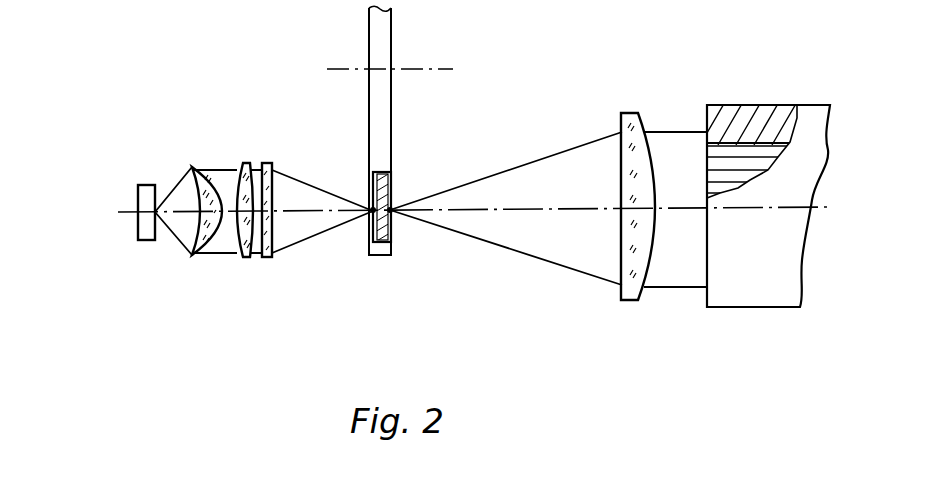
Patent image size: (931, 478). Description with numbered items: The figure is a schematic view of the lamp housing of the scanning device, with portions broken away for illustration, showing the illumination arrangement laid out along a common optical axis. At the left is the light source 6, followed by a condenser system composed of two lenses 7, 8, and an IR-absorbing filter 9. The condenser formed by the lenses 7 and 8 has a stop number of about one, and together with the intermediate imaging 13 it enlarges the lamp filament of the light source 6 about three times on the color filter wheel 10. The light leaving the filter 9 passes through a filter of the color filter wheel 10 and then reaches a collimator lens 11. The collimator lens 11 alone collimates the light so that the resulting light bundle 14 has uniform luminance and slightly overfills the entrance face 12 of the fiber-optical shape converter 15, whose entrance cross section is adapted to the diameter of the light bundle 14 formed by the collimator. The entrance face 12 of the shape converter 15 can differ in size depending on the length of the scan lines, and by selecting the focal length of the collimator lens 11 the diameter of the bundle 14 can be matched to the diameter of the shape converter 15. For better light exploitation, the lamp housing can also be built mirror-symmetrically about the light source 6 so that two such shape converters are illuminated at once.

The light source 6 is at (145, 232).
The condenser lens 7 is at (198, 252).
The condenser lens 8 is at (248, 258).
The IR-absorbing filter 9 is at (267, 258).
The color filter wheel 10 is at (382, 53).
The collimator lens 11 is at (622, 302).
The entrance face 12 is at (707, 167).
The intermediate imaging 13 is at (392, 228).
The light bundle 14 is at (673, 227).
The shape converter 15 is at (755, 282).